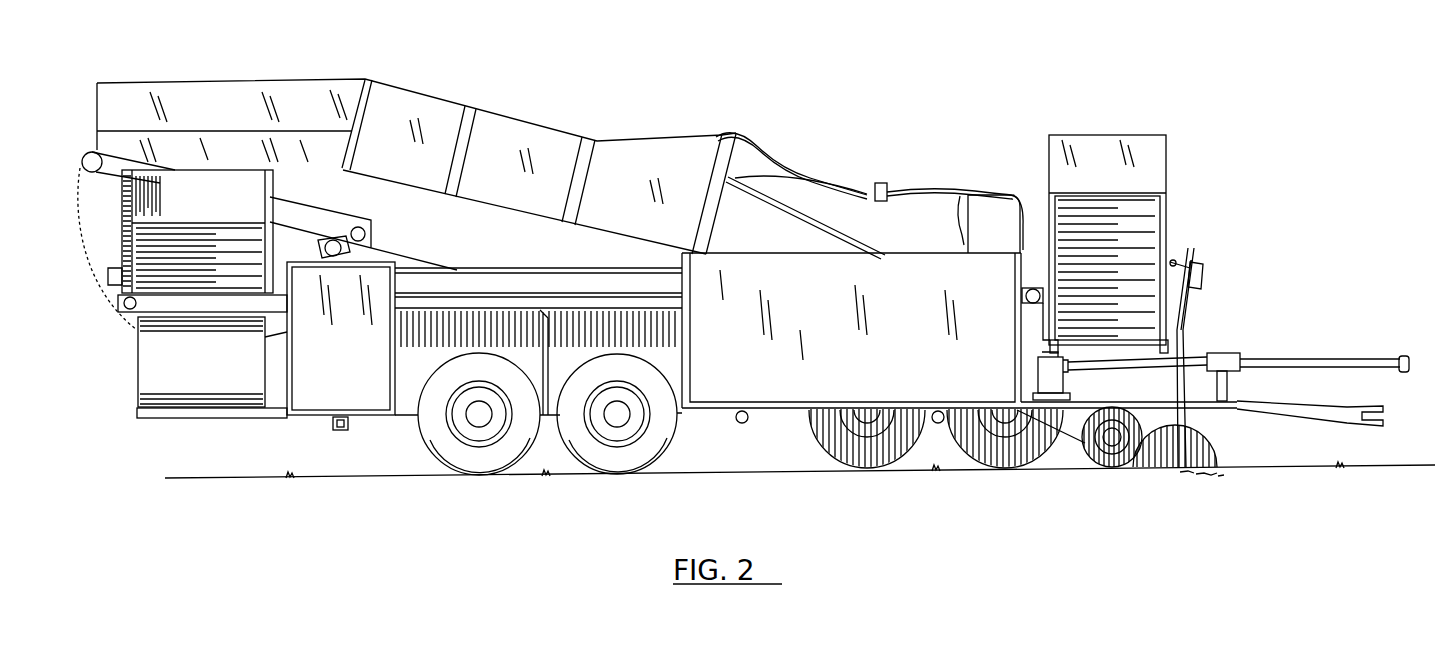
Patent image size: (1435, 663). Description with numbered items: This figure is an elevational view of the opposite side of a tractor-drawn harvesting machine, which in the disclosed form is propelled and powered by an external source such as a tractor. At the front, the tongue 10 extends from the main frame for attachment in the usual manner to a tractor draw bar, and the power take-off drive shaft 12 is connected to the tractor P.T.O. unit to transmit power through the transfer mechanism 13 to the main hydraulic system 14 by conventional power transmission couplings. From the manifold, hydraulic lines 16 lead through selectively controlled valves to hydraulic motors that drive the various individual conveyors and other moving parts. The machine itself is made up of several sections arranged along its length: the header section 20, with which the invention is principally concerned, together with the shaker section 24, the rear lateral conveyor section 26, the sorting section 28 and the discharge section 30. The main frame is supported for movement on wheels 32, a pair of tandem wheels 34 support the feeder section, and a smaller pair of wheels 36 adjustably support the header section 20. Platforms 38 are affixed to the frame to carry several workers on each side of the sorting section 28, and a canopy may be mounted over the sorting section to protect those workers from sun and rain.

The tongue 10 is at (1303, 416).
The power take-off drive shaft 12 is at (1350, 353).
The transfer mechanism 13 is at (1035, 370).
The main hydraulic system 14 is at (958, 239).
The hydraulic lines 16 is at (814, 173).
The header section 20 is at (1210, 325).
The shaker section 24 is at (564, 118).
The rear lateral conveyor section 26 is at (110, 324).
The sorting section 28 is at (518, 256).
The discharge section 30 is at (1180, 207).
The wheels 32 is at (600, 462).
The tandem wheels 34 is at (992, 458).
The wheels 36 is at (1108, 468).
The platforms 38 is at (315, 410).